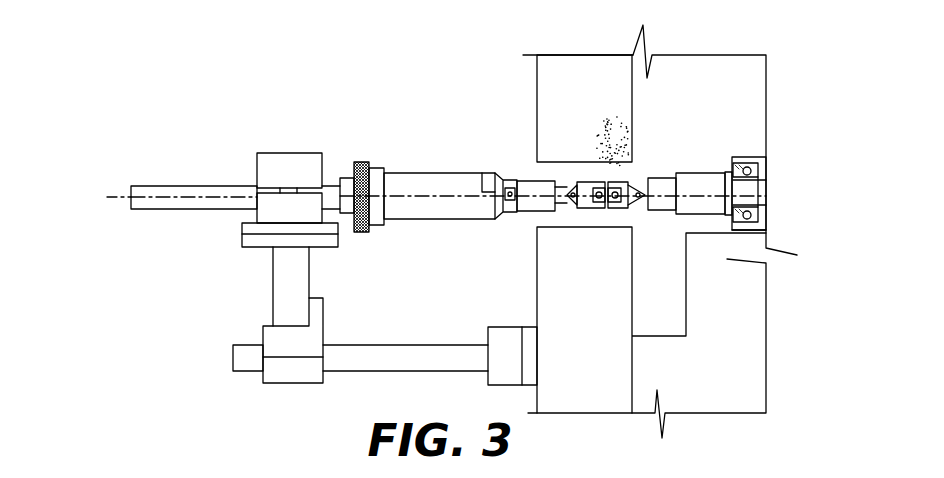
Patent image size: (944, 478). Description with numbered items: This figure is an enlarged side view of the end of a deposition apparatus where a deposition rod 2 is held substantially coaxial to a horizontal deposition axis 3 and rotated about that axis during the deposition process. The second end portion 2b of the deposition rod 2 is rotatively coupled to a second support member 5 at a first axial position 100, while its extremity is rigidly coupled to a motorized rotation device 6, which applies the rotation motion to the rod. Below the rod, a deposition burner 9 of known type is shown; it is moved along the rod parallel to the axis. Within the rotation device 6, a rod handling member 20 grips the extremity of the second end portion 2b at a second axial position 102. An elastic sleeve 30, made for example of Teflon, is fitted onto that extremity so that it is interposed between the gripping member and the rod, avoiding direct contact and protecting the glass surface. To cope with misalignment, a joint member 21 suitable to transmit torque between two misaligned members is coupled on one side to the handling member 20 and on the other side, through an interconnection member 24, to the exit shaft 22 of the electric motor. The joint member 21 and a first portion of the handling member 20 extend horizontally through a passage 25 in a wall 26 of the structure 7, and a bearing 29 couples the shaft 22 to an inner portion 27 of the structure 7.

The deposition rod 2 is at (155, 185).
The second end portion 2b is at (218, 194).
The horizontal deposition axis 3 is at (107, 198).
The second support member 5 is at (313, 150).
The motorized rotation device 6 is at (257, 114).
The structure 7 is at (542, 51).
The deposition burner 9 is at (390, 352).
The rod handling member 20 is at (437, 176).
The joint member 21 is at (604, 178).
The motor shaft 22 is at (757, 192).
The interconnection member 24 is at (706, 178).
The passage 25 is at (570, 224).
The wall 26 is at (541, 80).
The inner portion 27 is at (742, 157).
The bearing 29 is at (736, 233).
The elastic sleeve 30 is at (350, 178).
The first axial position 100 is at (281, 150).
The second axial position 102 is at (375, 163).